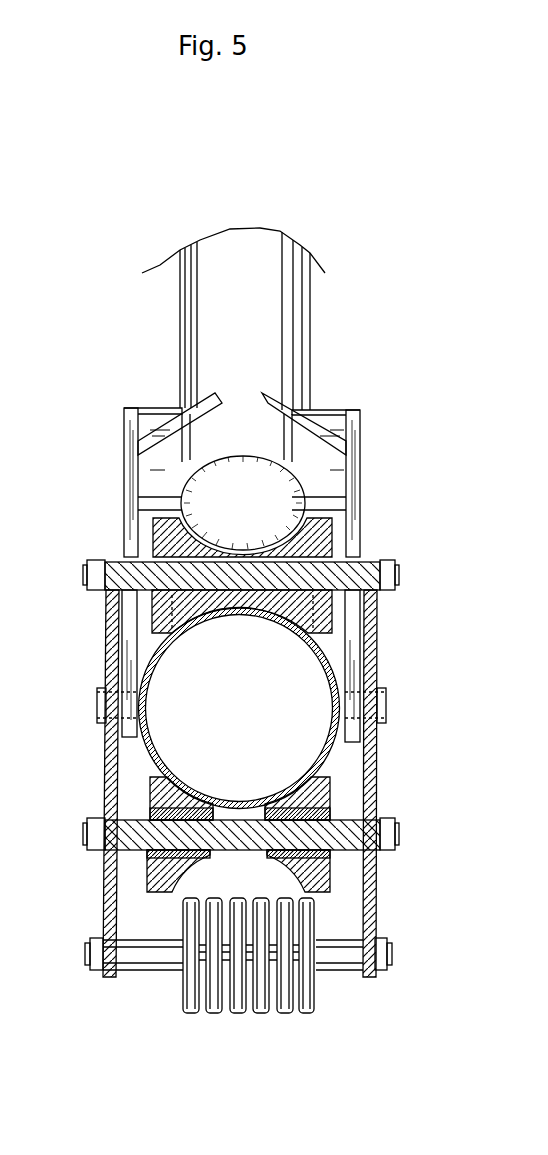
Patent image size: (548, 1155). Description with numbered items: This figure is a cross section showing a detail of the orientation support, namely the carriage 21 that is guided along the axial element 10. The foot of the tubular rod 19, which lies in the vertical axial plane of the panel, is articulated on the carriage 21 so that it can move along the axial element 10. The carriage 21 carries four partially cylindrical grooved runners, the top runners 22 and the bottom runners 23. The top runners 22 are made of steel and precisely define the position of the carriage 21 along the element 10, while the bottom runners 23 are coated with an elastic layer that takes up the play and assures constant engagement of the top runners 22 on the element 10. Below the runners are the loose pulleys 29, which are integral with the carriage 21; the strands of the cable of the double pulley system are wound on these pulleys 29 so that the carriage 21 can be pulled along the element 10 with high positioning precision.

The axial element 10 is at (327, 752).
The tubular rod 19 is at (295, 308).
The carriage 21 is at (97, 607).
The top runners 22 is at (337, 522).
The bottom runners 23 is at (327, 872).
The loose pulleys 29 is at (182, 983).